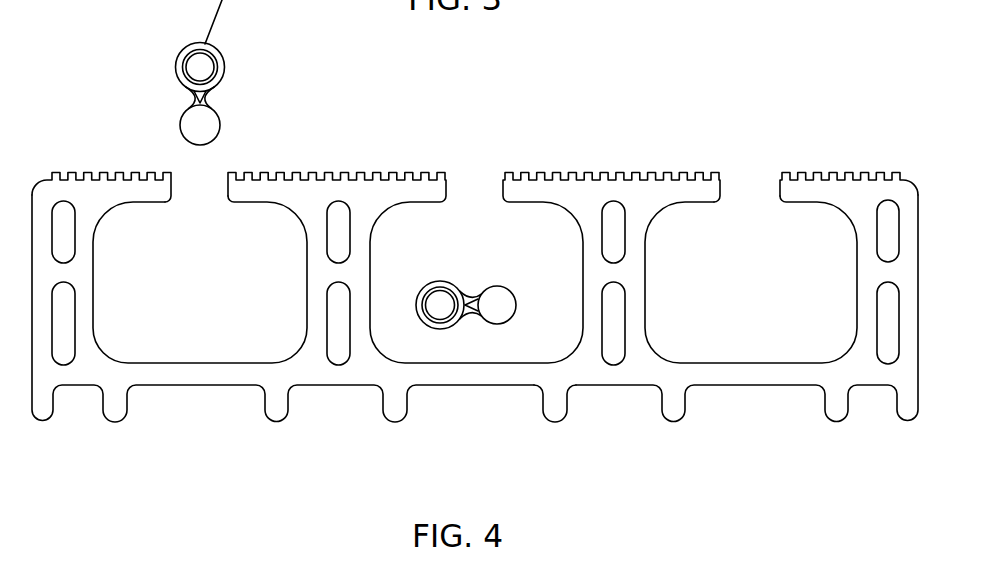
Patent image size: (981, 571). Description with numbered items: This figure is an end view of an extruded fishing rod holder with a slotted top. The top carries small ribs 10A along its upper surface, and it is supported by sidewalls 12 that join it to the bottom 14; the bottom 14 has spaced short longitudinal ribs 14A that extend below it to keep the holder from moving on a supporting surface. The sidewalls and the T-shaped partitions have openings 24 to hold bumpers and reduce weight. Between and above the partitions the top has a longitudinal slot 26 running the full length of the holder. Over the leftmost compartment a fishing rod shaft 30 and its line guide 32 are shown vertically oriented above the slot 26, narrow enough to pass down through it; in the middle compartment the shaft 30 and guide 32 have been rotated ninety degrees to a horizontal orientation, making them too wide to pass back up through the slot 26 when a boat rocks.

The small ribs 10A is at (328, 173).
The sidewalls 12 is at (95, 309).
The bottom 14 is at (705, 368).
The longitudinal ribs 14A is at (553, 402).
The openings 24 is at (887, 230).
The longitudinal slot 26 is at (193, 180).
The fishing rod shaft 30 is at (218, 118).
The fishing line guide 32 is at (450, 283).